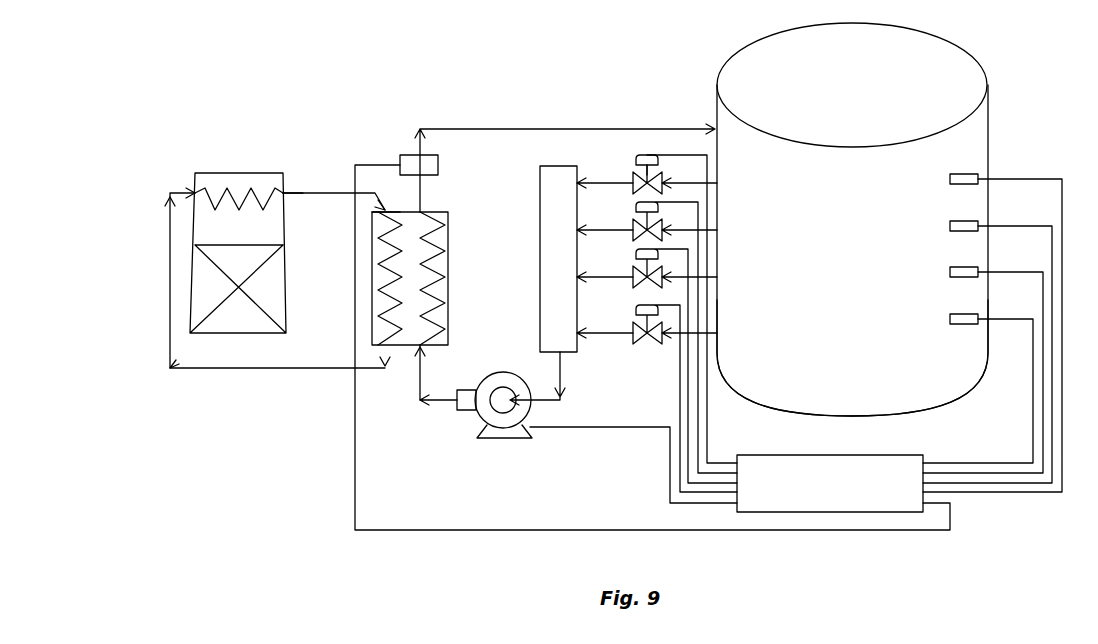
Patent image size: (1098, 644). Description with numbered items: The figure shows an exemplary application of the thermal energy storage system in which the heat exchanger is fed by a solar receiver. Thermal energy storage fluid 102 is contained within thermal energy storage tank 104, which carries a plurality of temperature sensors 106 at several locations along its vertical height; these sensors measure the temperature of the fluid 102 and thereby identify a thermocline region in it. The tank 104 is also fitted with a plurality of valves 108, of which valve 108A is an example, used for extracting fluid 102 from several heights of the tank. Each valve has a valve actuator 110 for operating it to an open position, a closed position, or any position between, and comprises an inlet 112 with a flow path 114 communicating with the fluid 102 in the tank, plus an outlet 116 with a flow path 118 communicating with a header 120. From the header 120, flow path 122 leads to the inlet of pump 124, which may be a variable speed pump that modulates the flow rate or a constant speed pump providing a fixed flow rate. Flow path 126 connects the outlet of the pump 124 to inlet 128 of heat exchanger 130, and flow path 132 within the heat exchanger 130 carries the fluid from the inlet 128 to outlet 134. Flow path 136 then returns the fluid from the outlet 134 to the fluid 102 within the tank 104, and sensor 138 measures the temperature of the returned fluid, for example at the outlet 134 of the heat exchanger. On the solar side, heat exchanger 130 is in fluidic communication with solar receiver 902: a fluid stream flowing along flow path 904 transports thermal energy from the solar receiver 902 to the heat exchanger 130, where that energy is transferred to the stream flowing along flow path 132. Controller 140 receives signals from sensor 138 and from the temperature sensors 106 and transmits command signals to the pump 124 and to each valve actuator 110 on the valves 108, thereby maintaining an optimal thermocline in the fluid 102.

The thermal energy storage fluid 102 is at (824, 250).
The thermal energy storage tank 104 is at (990, 122).
The temperature sensors 106 is at (955, 318).
The valves 108 is at (647, 352).
The valve 108A is at (650, 198).
The valve actuator 110 is at (655, 172).
The inlet 112 is at (708, 164).
The flow path 114 is at (702, 190).
The outlet 116 is at (648, 168).
The flow path 118 is at (600, 180).
The header 120 is at (540, 190).
The flow path 122 is at (555, 368).
The pump 124 is at (512, 440).
The flow path 126 is at (413, 385).
The inlet 128 is at (426, 350).
The heat exchanger 130 is at (449, 214).
The flow path 132 is at (448, 272).
The outlet 134 is at (423, 210).
The flow path 136 is at (460, 129).
The sensor 138 is at (399, 153).
The controller 140 is at (832, 500).
The solar receiver 902 is at (222, 150).
The flow path 904 is at (303, 193).